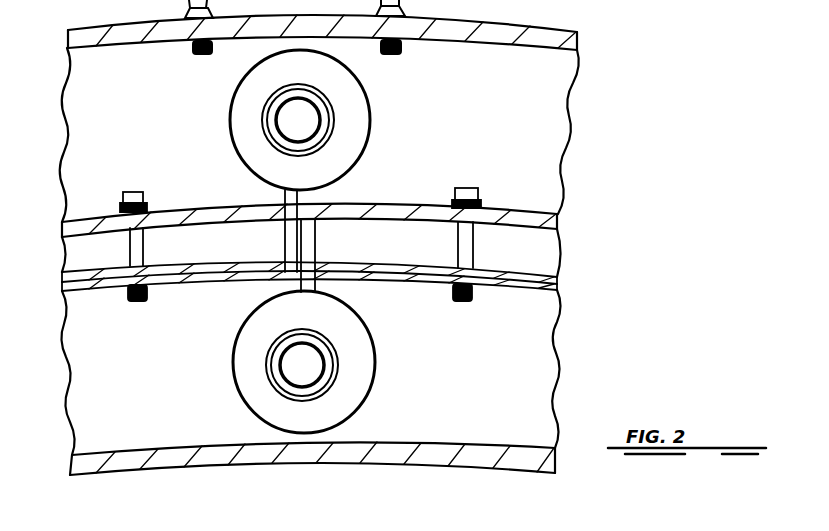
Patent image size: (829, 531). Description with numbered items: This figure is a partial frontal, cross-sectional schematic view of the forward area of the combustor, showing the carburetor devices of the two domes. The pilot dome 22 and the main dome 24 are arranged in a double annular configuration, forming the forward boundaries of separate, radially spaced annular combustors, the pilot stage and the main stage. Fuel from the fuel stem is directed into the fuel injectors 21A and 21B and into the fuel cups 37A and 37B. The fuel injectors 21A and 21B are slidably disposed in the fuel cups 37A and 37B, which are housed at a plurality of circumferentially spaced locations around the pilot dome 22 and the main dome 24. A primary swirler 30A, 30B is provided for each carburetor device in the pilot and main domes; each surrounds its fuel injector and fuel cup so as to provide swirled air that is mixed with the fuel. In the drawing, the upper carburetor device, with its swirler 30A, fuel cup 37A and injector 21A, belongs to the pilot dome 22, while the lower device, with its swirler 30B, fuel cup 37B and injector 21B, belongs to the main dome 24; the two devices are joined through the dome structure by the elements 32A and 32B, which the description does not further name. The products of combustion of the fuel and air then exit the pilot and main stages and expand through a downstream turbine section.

The pilot dome 22 is at (105, 134).
The main dome 24 is at (108, 393).
The primary swirler 30A is at (353, 139).
The primary swirler 30B is at (357, 338).
The upper roller hub 32A is at (235, 152).
The lower roller hub 32B is at (233, 360).
The fuel cup 37A is at (323, 115).
The fuel cup 37B is at (305, 392).
The fuel injector 21A is at (290, 128).
The fuel injector 21B is at (310, 367).